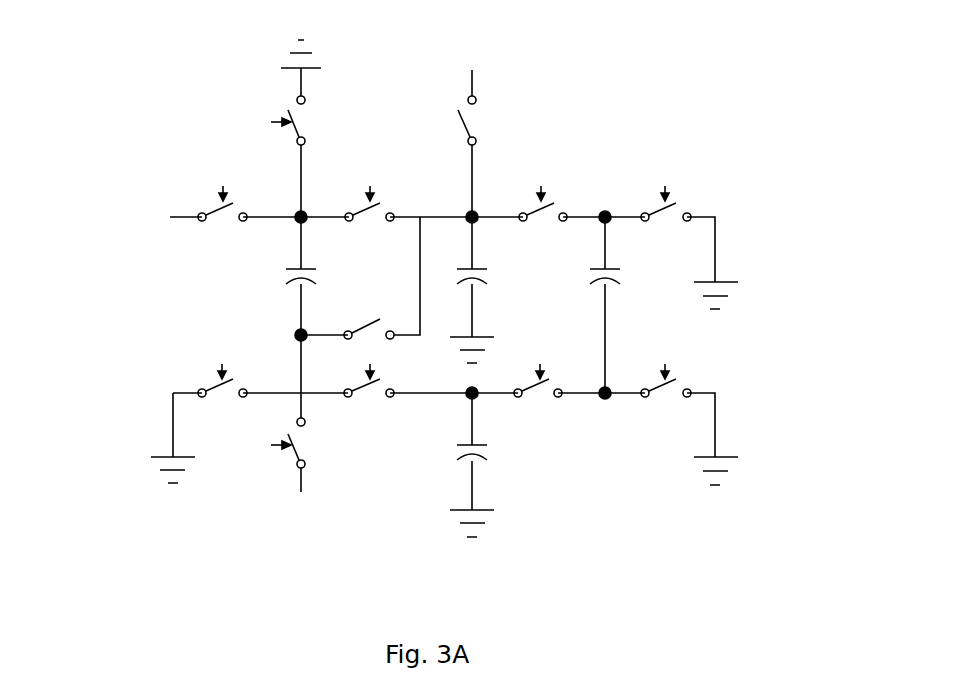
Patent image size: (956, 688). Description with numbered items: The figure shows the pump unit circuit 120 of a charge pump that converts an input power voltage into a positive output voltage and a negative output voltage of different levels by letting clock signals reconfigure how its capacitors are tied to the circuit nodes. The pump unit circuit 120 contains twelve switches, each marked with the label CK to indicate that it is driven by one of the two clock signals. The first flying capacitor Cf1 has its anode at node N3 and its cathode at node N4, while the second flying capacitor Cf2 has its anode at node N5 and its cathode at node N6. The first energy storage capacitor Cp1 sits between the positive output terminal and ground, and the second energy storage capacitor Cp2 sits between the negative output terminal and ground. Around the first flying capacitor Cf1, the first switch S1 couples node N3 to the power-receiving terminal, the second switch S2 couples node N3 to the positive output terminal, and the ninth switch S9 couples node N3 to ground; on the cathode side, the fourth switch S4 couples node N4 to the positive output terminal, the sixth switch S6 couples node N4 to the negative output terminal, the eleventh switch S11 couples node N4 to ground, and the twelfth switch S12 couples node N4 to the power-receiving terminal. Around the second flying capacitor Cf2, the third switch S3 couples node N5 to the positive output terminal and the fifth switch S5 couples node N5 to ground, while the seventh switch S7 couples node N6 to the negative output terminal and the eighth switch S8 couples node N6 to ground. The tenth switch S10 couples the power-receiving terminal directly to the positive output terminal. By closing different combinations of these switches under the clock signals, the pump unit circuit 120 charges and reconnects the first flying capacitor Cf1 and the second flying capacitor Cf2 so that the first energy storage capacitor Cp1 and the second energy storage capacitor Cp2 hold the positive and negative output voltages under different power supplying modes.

The pump unit circuit 120 is at (712, 49).
The first switch S1 is at (222, 204).
The second switch S2 is at (369, 204).
The third switch S3 is at (543, 208).
The fourth switch S4 is at (369, 313).
The fifth switch S5 is at (666, 208).
The sixth switch S6 is at (369, 380).
The seventh switch S7 is at (538, 366).
The eighth switch S8 is at (666, 382).
The ninth switch S9 is at (289, 120).
The tenth switch S10 is at (497, 120).
The eleventh switch S11 is at (224, 381).
The twelfth switch S12 is at (295, 443).
The node N3 is at (321, 206).
The node N4 is at (320, 321).
The node N5 is at (604, 203).
The node N6 is at (609, 408).
The first flying capacitor Cf1 is at (278, 274).
The second flying capacitor Cf2 is at (629, 278).
The first energy storage capacitor Cp1 is at (501, 276).
The second energy storage capacitor Cp2 is at (500, 449).